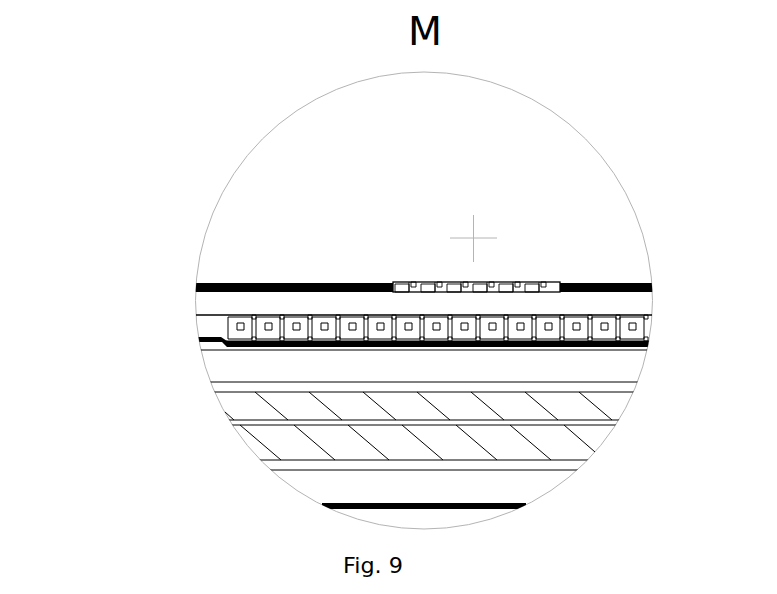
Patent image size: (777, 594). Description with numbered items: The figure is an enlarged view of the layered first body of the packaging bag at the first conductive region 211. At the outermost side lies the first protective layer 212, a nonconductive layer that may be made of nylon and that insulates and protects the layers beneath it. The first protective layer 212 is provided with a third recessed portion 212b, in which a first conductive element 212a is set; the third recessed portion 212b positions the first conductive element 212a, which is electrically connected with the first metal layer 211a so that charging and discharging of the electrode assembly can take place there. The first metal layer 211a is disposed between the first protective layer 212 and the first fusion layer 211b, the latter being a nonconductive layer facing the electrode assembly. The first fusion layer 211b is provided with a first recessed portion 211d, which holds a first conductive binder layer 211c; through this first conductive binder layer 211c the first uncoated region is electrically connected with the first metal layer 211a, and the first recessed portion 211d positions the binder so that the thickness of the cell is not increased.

The first conductive region 211 is at (342, 370).
The first metal layer 211a is at (213, 302).
The first fusion layer 211b is at (215, 327).
The first conductive binder layer 211c is at (338, 328).
The first recessed portion 211d is at (218, 347).
The first protective layer 212 is at (435, 200).
The first conductive element 212a is at (412, 282).
The third recessed portion 212b is at (383, 283).